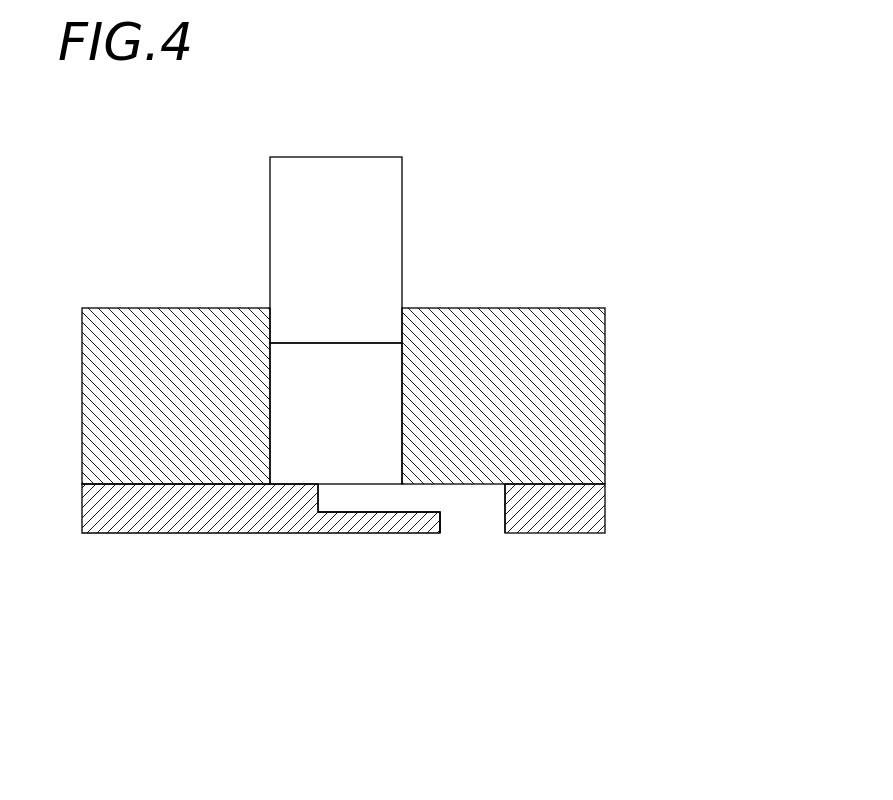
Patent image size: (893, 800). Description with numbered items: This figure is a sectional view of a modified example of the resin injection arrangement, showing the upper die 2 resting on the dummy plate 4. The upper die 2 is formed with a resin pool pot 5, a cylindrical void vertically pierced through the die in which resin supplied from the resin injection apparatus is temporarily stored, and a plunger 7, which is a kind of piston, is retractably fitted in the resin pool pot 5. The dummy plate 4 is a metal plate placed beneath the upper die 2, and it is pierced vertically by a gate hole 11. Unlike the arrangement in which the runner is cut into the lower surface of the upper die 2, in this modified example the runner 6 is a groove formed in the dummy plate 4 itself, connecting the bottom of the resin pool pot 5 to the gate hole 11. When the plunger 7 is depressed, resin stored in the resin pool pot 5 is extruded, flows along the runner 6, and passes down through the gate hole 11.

The upper die 2 is at (585, 397).
The dummy plate 4 is at (585, 511).
The resin pool pot 5 is at (324, 400).
The runner 6 is at (380, 498).
The plunger 7 is at (336, 203).
The gate hole 11 is at (477, 530).